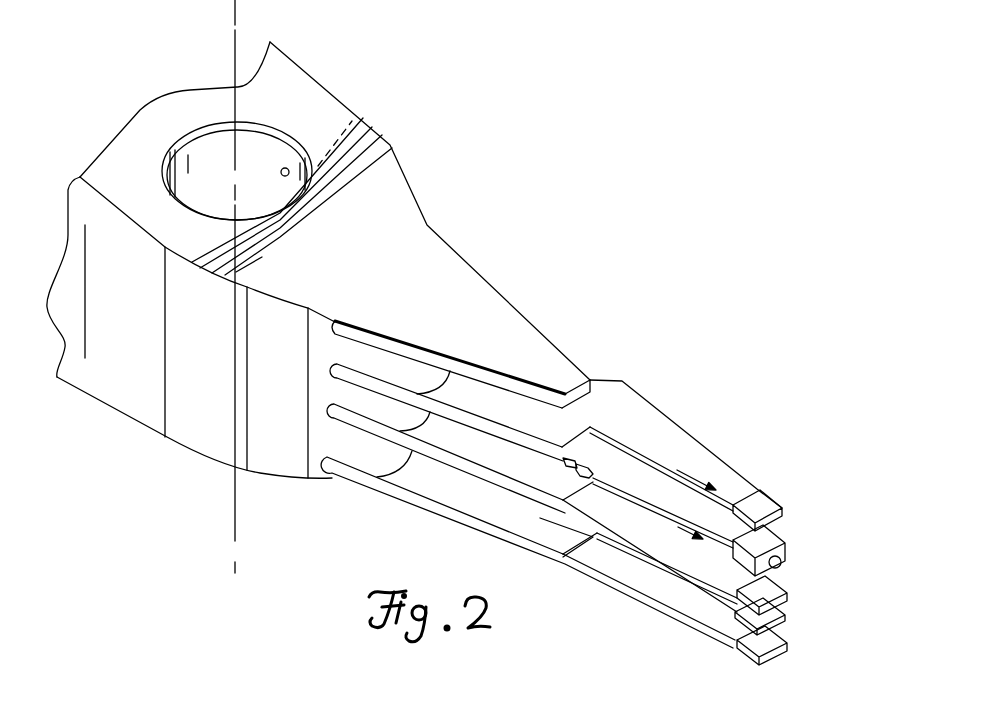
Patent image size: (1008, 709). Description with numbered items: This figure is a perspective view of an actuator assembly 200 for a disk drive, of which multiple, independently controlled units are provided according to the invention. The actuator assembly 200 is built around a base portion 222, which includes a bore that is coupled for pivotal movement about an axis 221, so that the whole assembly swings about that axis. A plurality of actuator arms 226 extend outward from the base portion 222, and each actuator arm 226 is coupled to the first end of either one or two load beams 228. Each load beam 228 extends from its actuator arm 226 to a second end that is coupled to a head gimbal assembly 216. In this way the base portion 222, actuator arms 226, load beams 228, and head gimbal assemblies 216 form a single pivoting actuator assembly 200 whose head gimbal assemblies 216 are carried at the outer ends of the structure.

The actuator assembly 200 is at (530, 248).
The head gimbal assembly 216 is at (790, 525).
The axis 221 is at (235, 500).
The base portion 222 is at (317, 95).
The actuator arm 226 is at (553, 535).
The load beam 228 is at (645, 577).